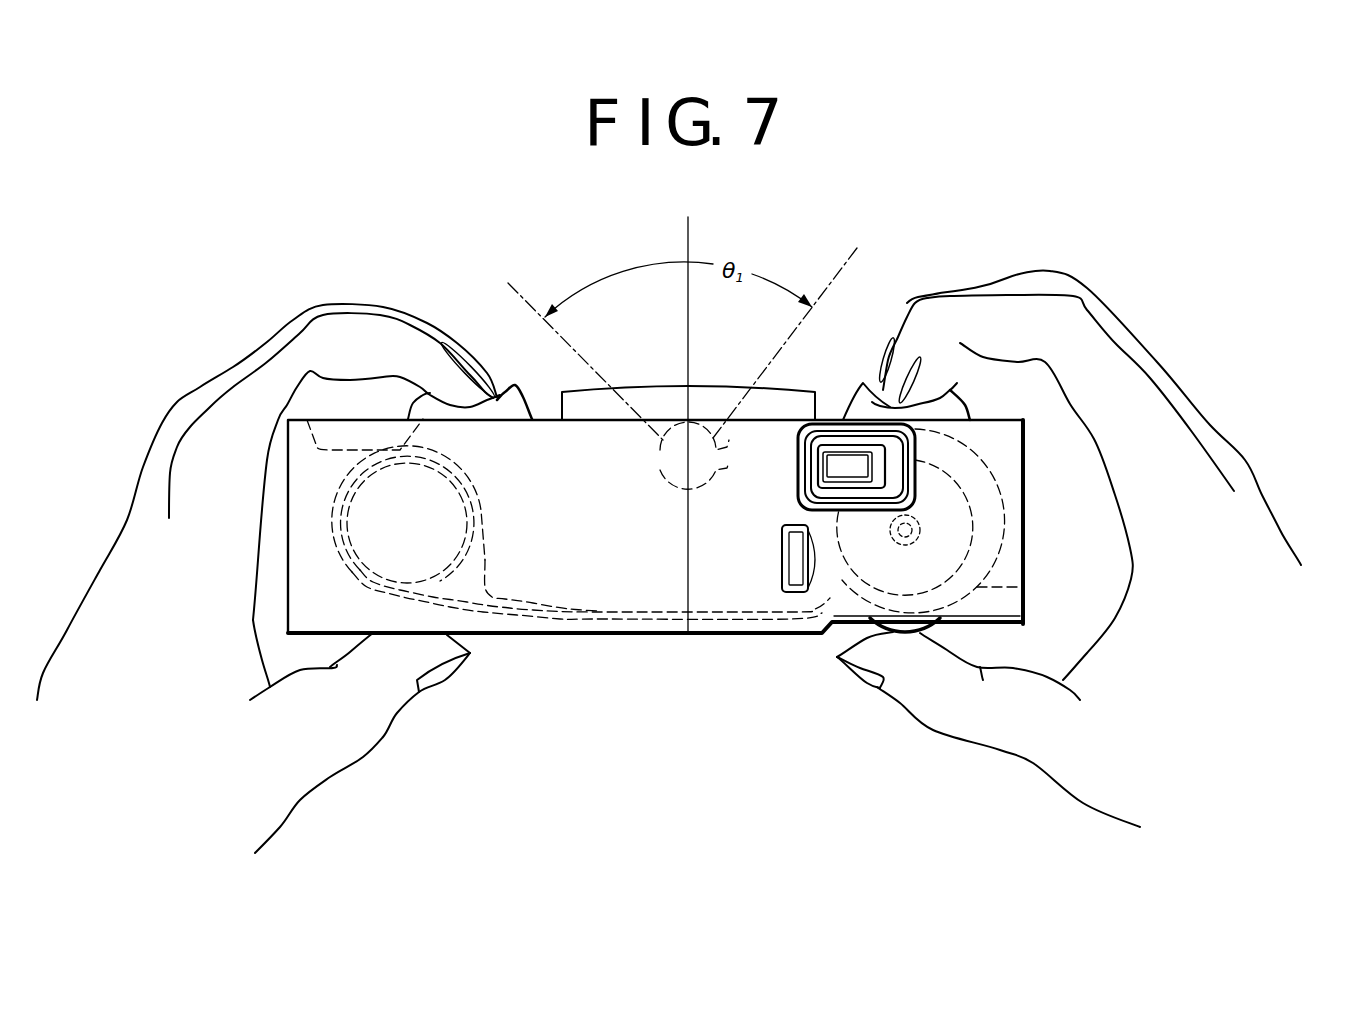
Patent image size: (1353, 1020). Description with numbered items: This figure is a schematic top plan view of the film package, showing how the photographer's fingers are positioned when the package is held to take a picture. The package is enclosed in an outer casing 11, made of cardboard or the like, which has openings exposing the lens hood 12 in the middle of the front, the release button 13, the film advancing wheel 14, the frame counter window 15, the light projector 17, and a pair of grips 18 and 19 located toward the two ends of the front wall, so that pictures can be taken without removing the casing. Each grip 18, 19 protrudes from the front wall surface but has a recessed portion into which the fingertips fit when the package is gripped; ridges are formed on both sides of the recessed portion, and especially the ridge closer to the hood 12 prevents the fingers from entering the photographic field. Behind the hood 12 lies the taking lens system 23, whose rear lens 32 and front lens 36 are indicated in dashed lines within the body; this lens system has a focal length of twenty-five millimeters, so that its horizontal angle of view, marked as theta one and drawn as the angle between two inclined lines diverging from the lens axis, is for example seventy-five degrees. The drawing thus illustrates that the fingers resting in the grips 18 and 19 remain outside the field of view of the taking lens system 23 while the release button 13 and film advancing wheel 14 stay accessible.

The outer casing 11 is at (532, 637).
The lens hood 12 is at (793, 400).
The release button 13 is at (800, 452).
The film advancing wheel 14 is at (907, 622).
The frame counter window 15 is at (782, 565).
The light projector 17 is at (330, 397).
The grip 18 is at (945, 408).
The grip 19 is at (420, 388).
The taking lens system 23 is at (614, 467).
The rear lens 32 is at (660, 468).
The front lens 36 is at (660, 450).